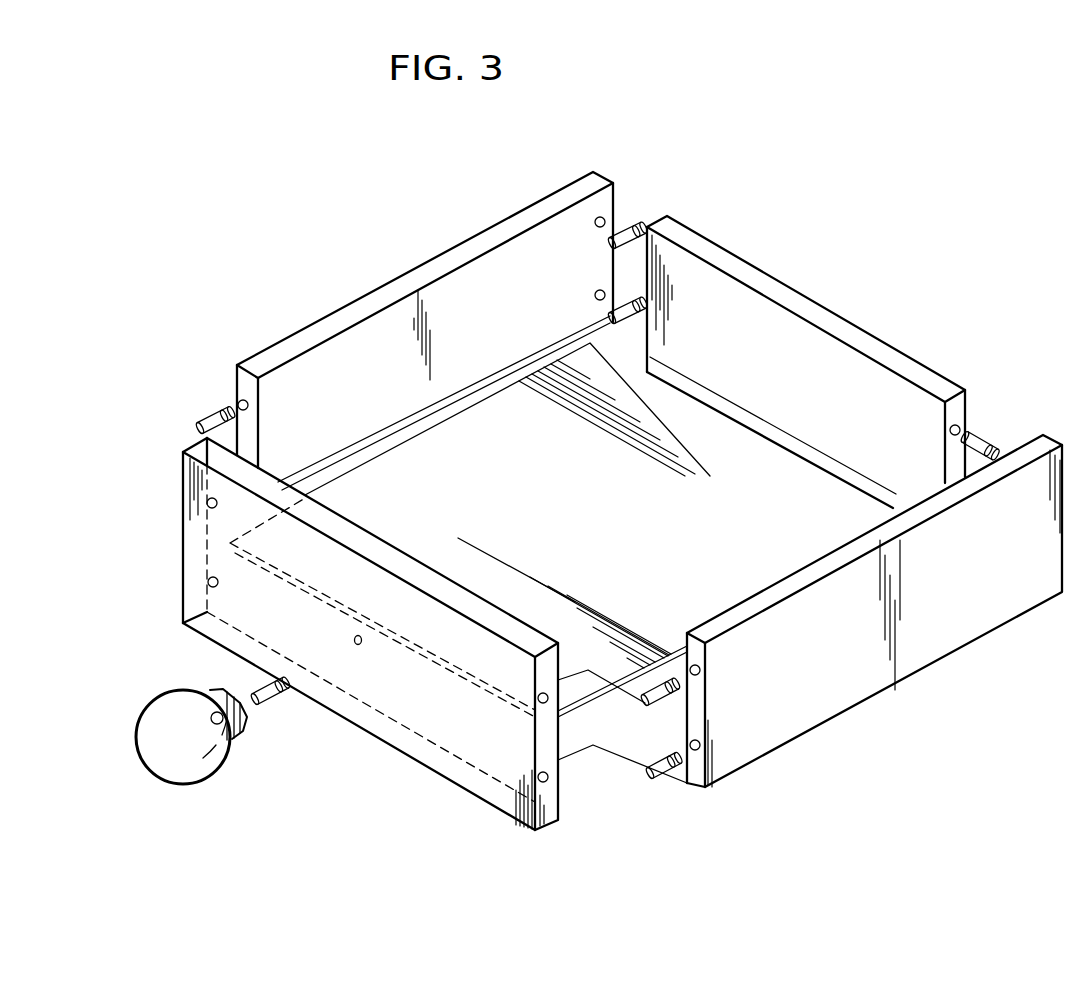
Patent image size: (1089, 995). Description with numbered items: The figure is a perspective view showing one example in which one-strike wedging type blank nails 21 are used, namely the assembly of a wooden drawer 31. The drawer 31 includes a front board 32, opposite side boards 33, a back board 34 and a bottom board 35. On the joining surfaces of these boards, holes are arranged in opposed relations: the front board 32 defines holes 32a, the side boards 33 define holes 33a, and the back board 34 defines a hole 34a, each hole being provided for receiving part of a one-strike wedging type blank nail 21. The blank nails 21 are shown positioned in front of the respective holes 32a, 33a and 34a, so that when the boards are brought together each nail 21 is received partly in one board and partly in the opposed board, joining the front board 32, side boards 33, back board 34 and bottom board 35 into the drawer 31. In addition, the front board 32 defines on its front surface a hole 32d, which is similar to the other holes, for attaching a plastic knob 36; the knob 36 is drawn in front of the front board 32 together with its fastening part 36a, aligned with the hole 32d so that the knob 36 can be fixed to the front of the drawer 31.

The drawer 31 is at (313, 218).
The one-strike wedging type blank nail 21 is at (213, 417).
The front board 32 is at (388, 743).
The hole 32a is at (208, 580).
The hole 32d is at (358, 645).
The side board 33 is at (483, 233).
The hole 33a is at (243, 398).
The back board 34 is at (840, 320).
The hole 34a is at (967, 428).
The bottom board 35 is at (573, 350).
The plastic knob 36 is at (180, 783).
The knob nut 36a is at (227, 753).